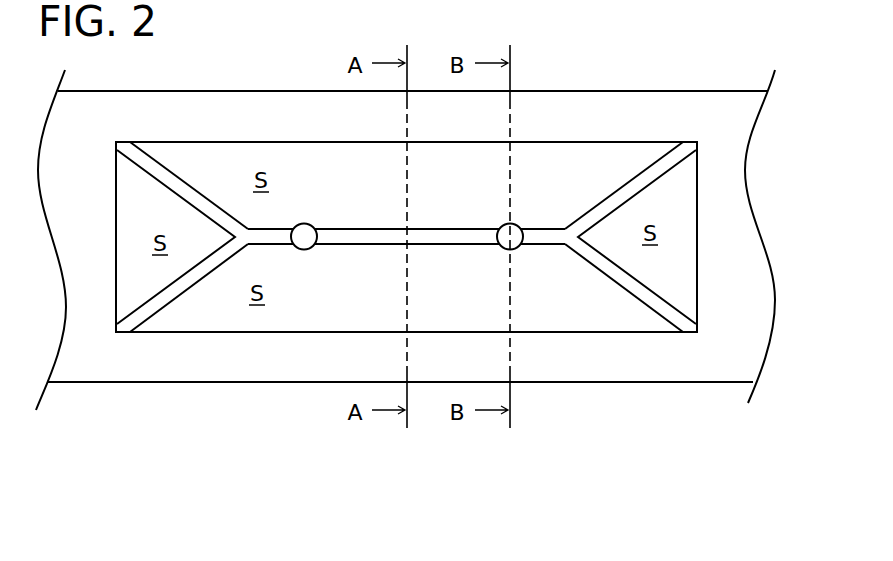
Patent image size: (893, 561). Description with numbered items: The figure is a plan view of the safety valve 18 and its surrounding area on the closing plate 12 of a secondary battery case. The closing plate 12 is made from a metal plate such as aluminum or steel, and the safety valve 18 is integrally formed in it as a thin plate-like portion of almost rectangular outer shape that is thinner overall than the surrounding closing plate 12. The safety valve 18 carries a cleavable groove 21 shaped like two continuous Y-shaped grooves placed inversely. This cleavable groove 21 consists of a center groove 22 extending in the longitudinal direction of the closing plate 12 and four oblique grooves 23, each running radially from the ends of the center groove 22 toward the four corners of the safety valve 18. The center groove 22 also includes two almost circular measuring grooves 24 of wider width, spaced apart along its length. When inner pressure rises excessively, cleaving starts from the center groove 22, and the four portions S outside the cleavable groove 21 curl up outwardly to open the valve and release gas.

The closing plate 12 is at (683, 100).
The safety valve 18 is at (584, 160).
The cleavable groove 21 is at (347, 226).
The center groove 22 is at (368, 243).
The oblique grooves 23 is at (188, 280).
The measuring grooves 24 is at (298, 249).